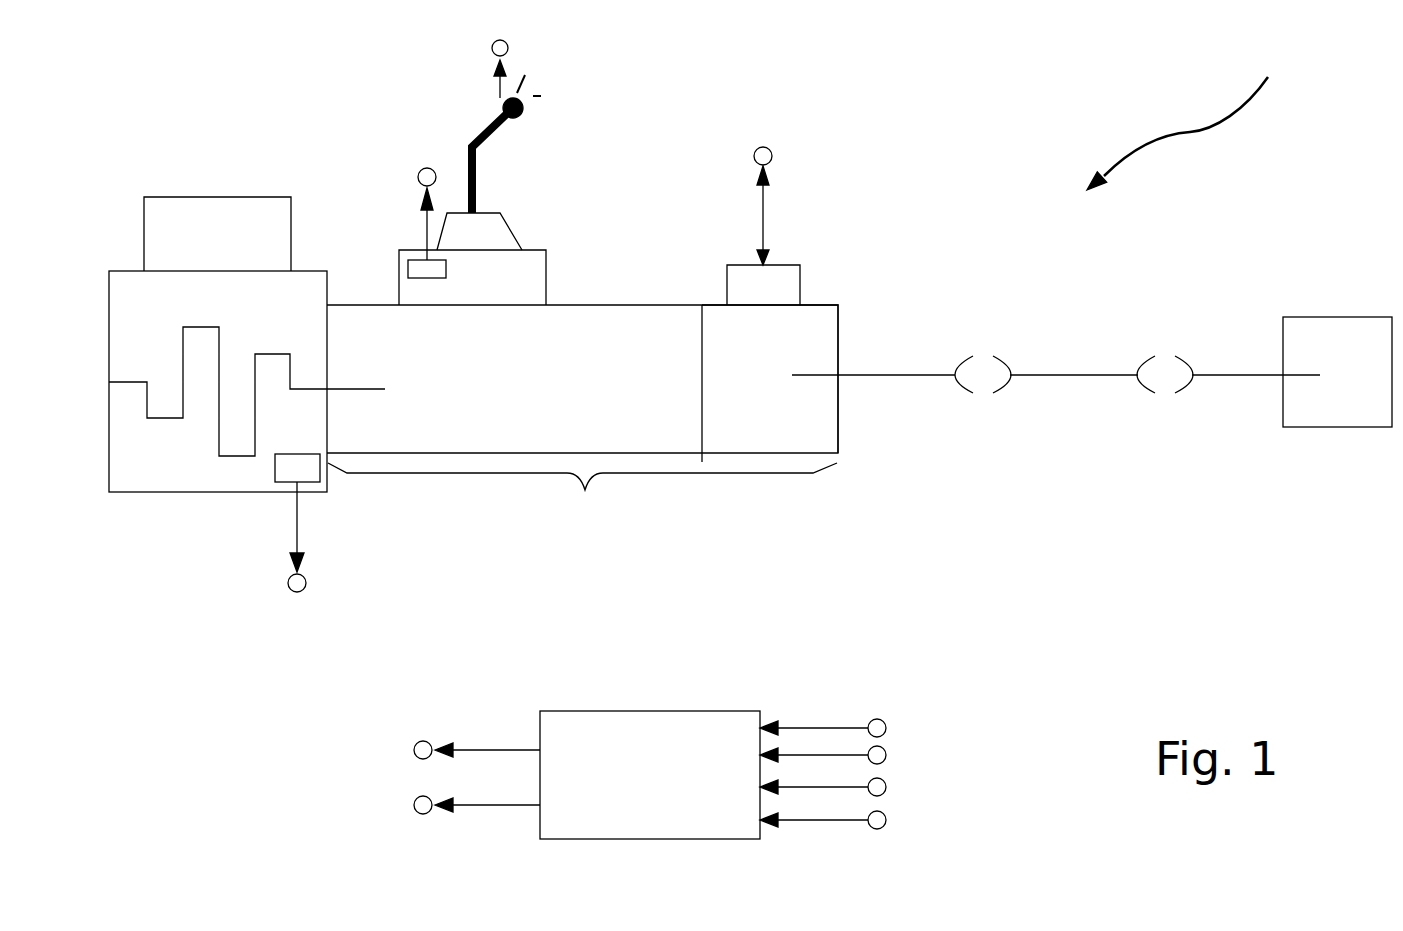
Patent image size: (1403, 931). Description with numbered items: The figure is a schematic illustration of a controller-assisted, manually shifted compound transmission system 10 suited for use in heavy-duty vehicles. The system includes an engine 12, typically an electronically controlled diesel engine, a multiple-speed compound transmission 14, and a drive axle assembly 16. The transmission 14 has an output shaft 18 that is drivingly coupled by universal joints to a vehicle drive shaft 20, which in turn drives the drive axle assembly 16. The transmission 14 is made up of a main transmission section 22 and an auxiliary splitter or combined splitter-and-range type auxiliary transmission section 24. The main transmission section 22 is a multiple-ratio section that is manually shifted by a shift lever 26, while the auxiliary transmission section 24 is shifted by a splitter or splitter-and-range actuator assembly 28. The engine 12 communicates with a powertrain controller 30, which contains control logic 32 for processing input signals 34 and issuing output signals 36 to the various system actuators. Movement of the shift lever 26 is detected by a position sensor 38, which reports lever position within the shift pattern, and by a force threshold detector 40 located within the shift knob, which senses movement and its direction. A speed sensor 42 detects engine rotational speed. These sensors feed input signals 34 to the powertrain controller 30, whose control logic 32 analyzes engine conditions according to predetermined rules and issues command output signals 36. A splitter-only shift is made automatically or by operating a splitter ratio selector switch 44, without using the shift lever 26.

The controller-assisted compound transmission system 10 is at (1193, 118).
The engine 12 is at (303, 280).
The multiple-speed compound transmission 14 is at (582, 492).
The drive axle assembly 16 is at (1323, 330).
The output shaft 18 is at (902, 375).
The vehicle drive shaft 20 is at (1055, 375).
The main transmission section 22 is at (608, 313).
The auxiliary transmission section 24 is at (828, 320).
The shift lever 26 is at (478, 190).
The actuator assembly 28 is at (790, 277).
The powertrain controller 30 is at (272, 207).
The control logic 32 is at (640, 728).
The input signals 34 is at (822, 718).
The output signals 36 is at (432, 732).
The position sensor 38 is at (421, 272).
The force threshold detector 40 is at (503, 109).
The speed sensor 42 is at (300, 473).
The splitter ratio selector switch 44 is at (535, 82).